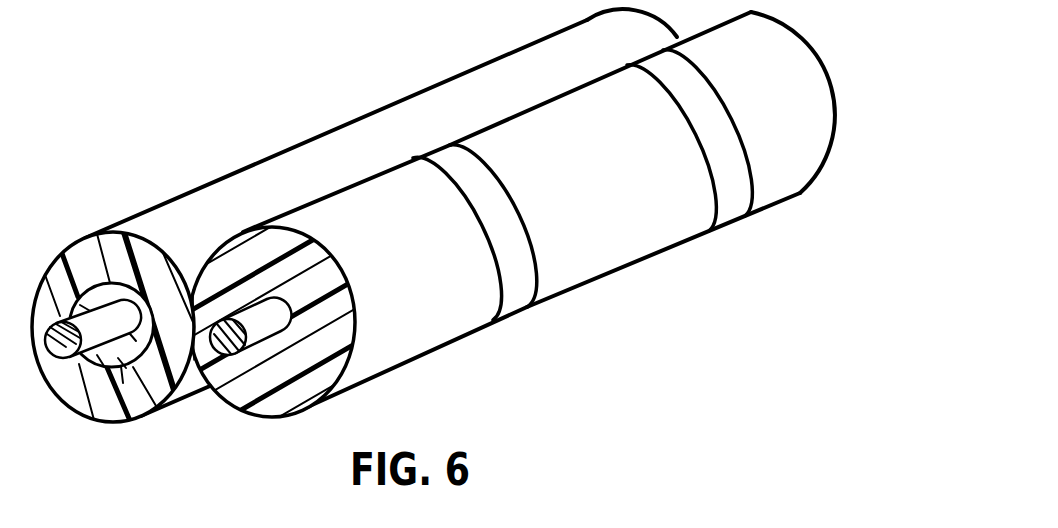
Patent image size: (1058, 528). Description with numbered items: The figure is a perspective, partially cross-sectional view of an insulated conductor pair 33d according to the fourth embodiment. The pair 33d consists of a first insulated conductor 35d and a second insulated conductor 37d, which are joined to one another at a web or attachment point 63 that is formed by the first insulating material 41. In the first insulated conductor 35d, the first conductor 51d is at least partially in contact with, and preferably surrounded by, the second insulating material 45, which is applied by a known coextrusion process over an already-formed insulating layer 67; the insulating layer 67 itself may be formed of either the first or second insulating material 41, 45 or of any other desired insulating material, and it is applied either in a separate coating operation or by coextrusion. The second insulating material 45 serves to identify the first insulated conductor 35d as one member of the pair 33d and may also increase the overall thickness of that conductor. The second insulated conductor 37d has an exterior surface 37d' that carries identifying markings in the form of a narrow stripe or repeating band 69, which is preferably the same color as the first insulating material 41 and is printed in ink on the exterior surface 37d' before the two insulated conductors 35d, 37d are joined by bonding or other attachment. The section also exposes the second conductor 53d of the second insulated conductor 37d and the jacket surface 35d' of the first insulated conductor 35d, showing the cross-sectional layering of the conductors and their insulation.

The insulated conductor pair 33d is at (206, 108).
The first insulated conductor 35d is at (354, 253).
The first cable jacket 35d' is at (381, 123).
The second insulated conductor 37d is at (507, 243).
The exterior surface 37d' is at (418, 277).
The first insulating material 41 is at (103, 295).
The second insulating material 45 is at (270, 400).
The first conductor 51d is at (56, 358).
The second conductor 53d is at (228, 357).
The web or attachment point 63 is at (193, 360).
The insulating layer 67 is at (123, 395).
The narrow stripe or repeating band 69 is at (495, 308).